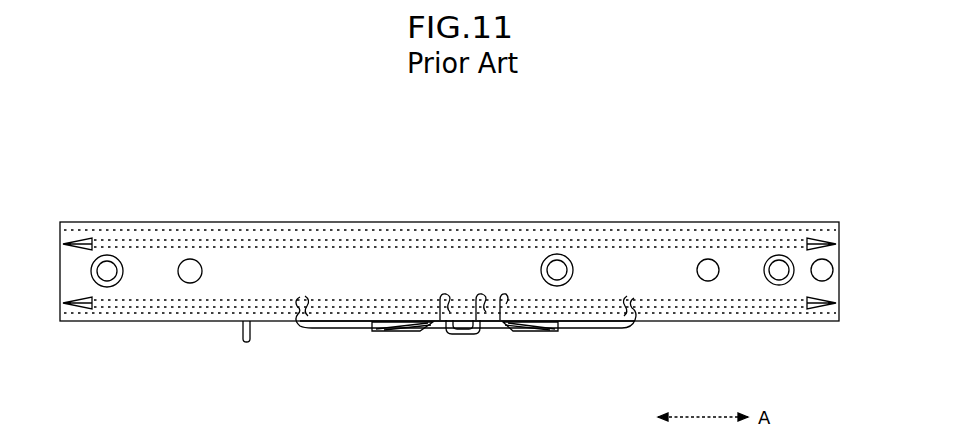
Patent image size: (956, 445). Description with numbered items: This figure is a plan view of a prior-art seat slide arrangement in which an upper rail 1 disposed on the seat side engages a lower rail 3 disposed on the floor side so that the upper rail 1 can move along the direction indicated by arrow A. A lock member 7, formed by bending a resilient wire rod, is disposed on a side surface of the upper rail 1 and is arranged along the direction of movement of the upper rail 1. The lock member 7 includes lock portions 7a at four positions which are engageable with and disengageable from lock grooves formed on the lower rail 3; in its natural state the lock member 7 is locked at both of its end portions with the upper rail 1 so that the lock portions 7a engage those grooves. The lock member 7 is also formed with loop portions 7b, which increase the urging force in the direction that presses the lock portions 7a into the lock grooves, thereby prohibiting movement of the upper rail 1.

The upper rail 1 is at (712, 222).
The lower rail 3 is at (689, 232).
The lock member 7 is at (348, 324).
The lock portions 7a is at (437, 296).
The loop portions 7b is at (388, 334).